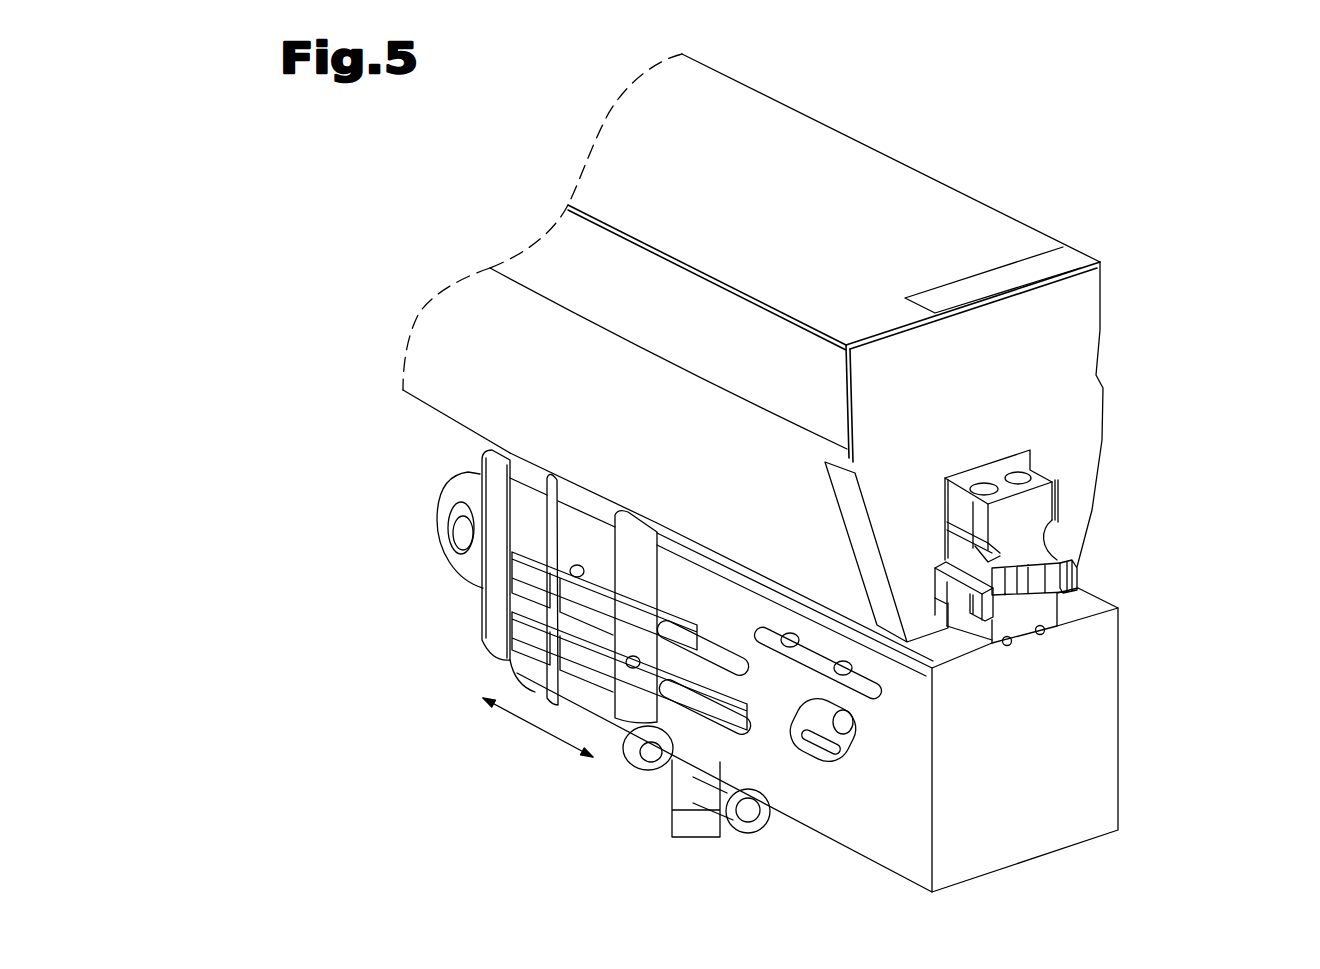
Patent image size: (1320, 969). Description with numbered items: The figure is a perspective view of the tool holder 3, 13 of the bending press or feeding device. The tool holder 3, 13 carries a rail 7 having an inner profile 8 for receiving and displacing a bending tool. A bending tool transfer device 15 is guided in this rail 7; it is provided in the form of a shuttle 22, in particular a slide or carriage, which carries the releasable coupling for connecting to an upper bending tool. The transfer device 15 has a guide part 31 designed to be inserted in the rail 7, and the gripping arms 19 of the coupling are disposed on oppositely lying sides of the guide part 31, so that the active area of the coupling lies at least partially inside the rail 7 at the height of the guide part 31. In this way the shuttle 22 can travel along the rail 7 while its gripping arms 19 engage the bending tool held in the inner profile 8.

The tool holder 3 is at (753, 348).
The tool holder 13 is at (952, 230).
The inner profile 8 is at (1035, 456).
The guide part 31 is at (1058, 520).
The rail 7 is at (1065, 535).
The gripping arms 19 is at (967, 620).
The transfer device 15 is at (660, 803).
The shuttle 22 is at (797, 823).